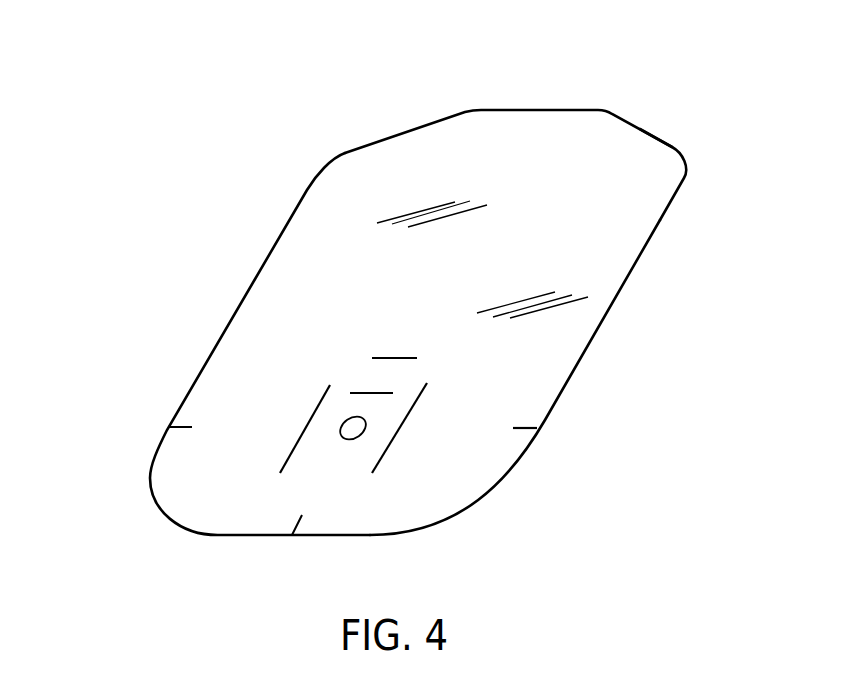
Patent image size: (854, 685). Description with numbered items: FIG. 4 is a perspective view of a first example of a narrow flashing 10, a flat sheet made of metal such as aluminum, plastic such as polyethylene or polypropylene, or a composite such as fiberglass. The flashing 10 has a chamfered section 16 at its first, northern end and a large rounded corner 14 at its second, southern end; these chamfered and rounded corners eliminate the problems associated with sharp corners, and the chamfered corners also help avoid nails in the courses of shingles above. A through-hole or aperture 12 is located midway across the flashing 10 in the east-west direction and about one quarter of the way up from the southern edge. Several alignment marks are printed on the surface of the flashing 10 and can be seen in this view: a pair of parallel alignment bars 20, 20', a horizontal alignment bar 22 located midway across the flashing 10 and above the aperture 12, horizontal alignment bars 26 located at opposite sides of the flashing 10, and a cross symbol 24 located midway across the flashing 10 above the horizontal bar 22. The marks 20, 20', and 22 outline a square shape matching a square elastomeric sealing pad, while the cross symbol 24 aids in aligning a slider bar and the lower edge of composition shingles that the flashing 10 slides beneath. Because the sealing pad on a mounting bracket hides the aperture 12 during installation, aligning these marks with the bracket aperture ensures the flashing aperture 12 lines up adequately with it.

The flashing 10 is at (513, 127).
The aperture 12 is at (365, 420).
The large rounded corner 14 is at (472, 498).
The chamfered section 16 is at (638, 127).
The alignment mark 20 is at (529, 451).
The alignment mark 20' is at (185, 383).
The horizontal alignment bar 22 is at (365, 387).
The cross symbol 24 is at (398, 368).
The horizontal alignment bars 26 is at (527, 432).